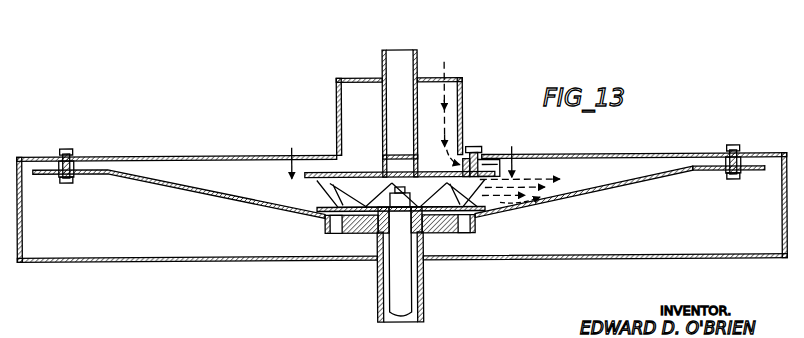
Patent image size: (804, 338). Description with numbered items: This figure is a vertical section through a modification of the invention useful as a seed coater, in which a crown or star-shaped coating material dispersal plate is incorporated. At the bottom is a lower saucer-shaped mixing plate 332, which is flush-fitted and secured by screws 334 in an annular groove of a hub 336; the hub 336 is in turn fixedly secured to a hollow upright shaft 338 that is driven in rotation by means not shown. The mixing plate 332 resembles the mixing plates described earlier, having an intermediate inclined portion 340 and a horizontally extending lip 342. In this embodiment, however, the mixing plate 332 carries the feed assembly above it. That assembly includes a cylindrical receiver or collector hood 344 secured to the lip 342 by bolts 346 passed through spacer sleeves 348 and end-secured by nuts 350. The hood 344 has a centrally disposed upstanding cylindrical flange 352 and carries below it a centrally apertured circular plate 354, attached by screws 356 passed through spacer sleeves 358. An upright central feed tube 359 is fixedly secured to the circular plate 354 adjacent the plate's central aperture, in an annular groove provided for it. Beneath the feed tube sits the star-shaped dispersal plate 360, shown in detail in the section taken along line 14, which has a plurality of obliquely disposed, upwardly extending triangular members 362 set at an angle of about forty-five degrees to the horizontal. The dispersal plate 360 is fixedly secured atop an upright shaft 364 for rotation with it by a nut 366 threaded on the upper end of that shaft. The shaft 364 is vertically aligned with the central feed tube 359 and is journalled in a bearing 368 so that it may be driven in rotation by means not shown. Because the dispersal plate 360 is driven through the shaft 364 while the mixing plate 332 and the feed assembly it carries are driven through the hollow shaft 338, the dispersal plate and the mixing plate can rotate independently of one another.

The section line 14- 14 is at (406, 164).
The mixing plate 332 is at (174, 192).
The screws 334 is at (326, 226).
The hub 336 is at (486, 212).
The hollow upright shaft 338 is at (380, 306).
The intermediate inclined portion 340 is at (600, 182).
The horizontally extending lip 342 is at (693, 172).
The collector hood 344 is at (150, 156).
The bolts 346 is at (68, 150).
The spacer sleeves 348 is at (60, 148).
The nuts 350 is at (67, 182).
The upstanding cylindrical flange 352 is at (337, 95).
The circular plate 354 is at (325, 172).
The screws 356 is at (474, 147).
The spacer sleeves 358 is at (490, 160).
The central feed tube 359 is at (385, 66).
The star-shaped dispersal plate 360 is at (378, 228).
The triangular members 362 is at (320, 192).
The upright shaft 364 is at (398, 279).
The nut 366 is at (422, 226).
The bearing 368 is at (424, 262).